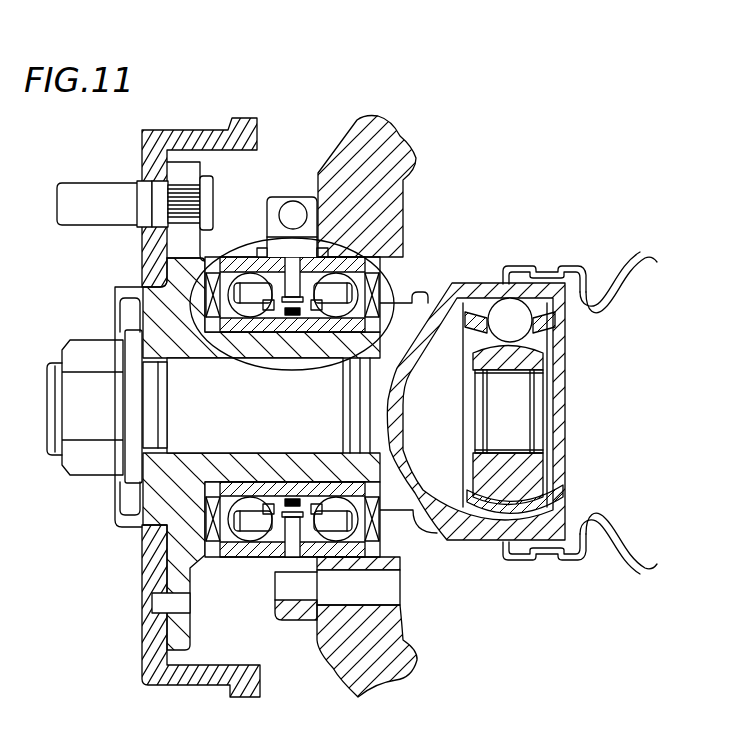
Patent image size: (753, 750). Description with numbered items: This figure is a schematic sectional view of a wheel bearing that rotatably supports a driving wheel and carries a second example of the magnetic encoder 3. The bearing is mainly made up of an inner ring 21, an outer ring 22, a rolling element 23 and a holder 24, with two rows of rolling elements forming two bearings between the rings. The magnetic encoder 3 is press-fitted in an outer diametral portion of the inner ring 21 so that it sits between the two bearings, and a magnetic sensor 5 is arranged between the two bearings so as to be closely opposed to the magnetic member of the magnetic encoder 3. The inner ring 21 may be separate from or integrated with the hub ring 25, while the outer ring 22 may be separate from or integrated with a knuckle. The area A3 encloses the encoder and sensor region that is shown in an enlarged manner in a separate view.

The magnetic encoder 3 is at (330, 389).
The magnetic sensor 5 is at (290, 282).
The inner ring 21 is at (397, 294).
The outer ring 22 is at (343, 255).
The rolling element 23 is at (382, 262).
The holder 24 is at (292, 197).
The hub ring 25 is at (116, 311).
The area A3 is at (385, 282).